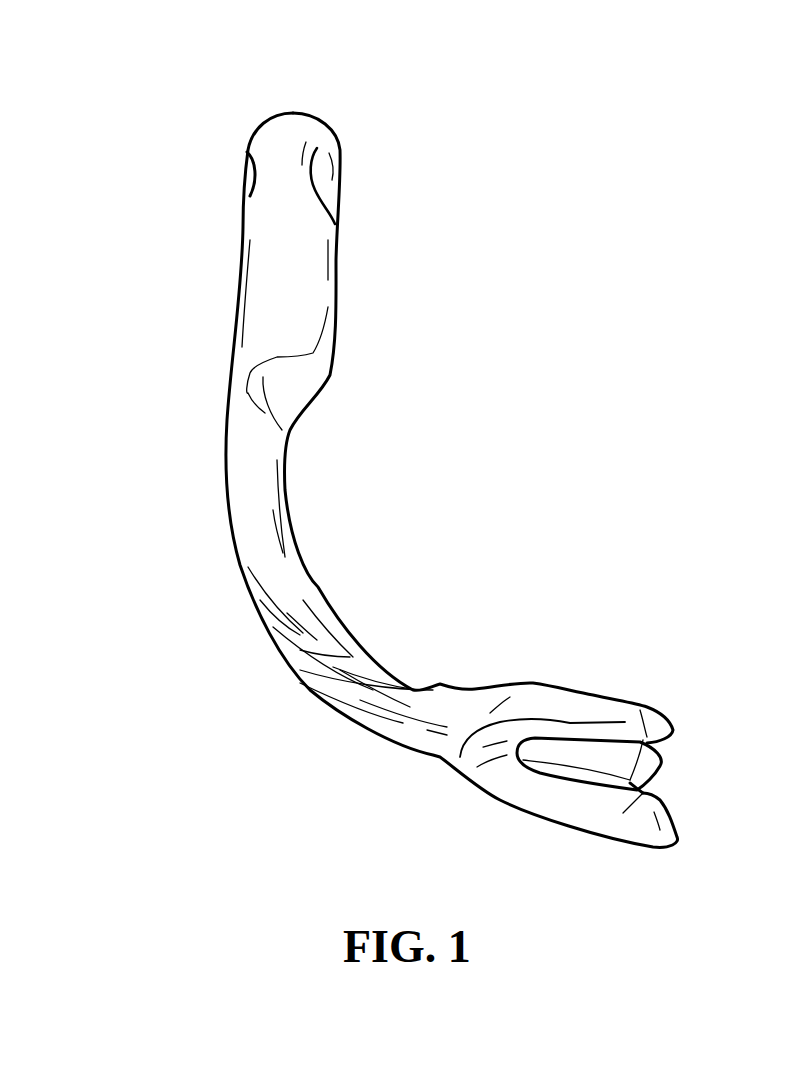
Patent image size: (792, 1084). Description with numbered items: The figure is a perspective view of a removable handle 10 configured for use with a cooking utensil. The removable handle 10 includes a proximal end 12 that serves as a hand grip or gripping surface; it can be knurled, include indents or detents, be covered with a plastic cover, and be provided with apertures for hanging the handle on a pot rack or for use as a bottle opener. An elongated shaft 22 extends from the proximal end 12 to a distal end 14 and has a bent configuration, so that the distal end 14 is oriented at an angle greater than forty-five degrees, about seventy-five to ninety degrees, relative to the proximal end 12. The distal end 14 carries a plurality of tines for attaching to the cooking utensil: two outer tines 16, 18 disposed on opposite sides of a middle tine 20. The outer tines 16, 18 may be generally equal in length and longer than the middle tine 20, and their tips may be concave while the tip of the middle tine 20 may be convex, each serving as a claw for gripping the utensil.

The removable handle 10 is at (456, 277).
The proximal end 12 is at (292, 122).
The distal end 14 is at (475, 687).
The outer tine 16 is at (607, 757).
The outer tine 18 is at (590, 707).
The middle tine 20 is at (647, 793).
The elongated shaft 22 is at (318, 587).